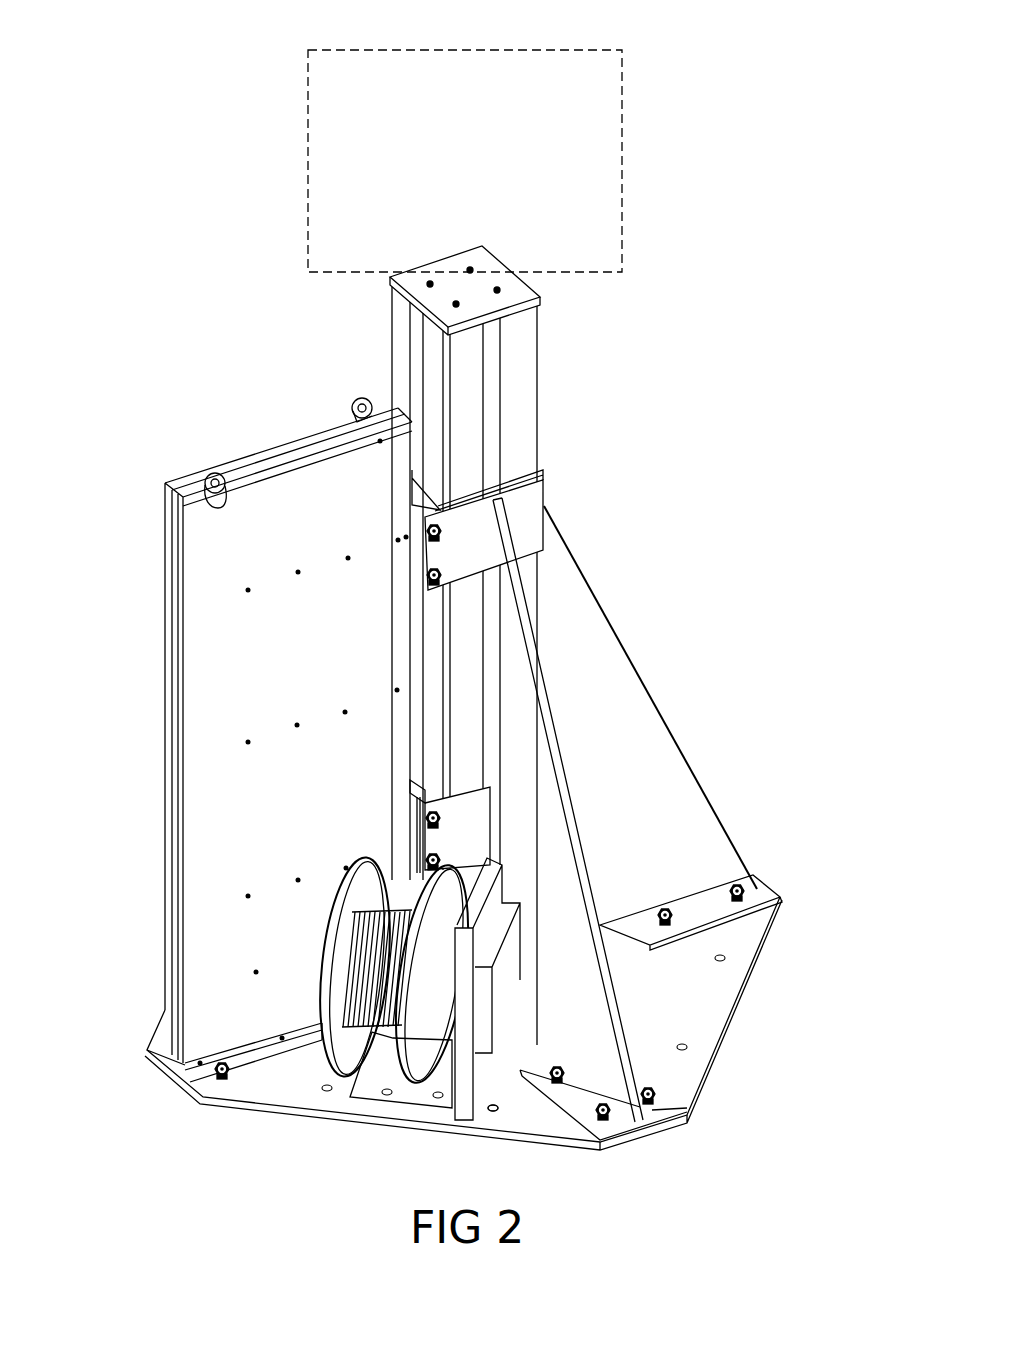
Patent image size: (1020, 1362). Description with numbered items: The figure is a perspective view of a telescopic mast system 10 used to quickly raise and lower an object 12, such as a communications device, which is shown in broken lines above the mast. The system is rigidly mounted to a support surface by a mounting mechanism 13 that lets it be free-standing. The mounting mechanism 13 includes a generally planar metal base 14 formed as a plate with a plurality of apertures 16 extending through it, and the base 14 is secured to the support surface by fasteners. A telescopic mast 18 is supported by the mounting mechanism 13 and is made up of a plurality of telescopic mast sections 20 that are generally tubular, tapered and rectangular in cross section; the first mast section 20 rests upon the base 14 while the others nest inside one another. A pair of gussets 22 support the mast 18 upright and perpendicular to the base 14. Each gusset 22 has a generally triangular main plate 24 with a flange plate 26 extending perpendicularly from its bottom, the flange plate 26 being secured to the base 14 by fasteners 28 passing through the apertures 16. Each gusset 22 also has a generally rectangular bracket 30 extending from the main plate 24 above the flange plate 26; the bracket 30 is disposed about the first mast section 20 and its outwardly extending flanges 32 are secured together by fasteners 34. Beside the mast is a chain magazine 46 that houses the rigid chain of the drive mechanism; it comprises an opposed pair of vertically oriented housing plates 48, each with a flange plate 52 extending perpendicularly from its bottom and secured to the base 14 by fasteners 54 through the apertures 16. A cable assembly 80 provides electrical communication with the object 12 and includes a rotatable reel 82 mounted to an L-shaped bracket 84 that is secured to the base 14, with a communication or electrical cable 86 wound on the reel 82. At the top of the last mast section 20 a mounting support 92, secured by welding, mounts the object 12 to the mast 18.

The telescopic mast system 10 is at (230, 362).
The object 12 is at (300, 146).
The mounting mechanism 13 is at (756, 988).
The base 14 is at (275, 1094).
The apertures 16 is at (500, 1110).
The telescopic mast 18 is at (510, 633).
The telescopic mast sections 20 is at (400, 350).
The gussets 22 is at (618, 664).
The main plate 24 is at (640, 704).
The flange plate 26 is at (765, 890).
The fasteners 28 is at (743, 880).
The bracket 30 is at (548, 511).
The flanges 32 is at (422, 508).
The fasteners 34 is at (428, 578).
The chain magazine 46 is at (228, 448).
The housing plates 48 is at (200, 570).
The flange plate 52 is at (228, 1100).
The fasteners 54 is at (196, 1068).
The cable assembly 80 is at (358, 952).
The rotatable reel 82 is at (340, 960).
The L-shaped bracket 84 is at (468, 1092).
The cable 86 is at (400, 1050).
The mounting support 92 is at (422, 277).